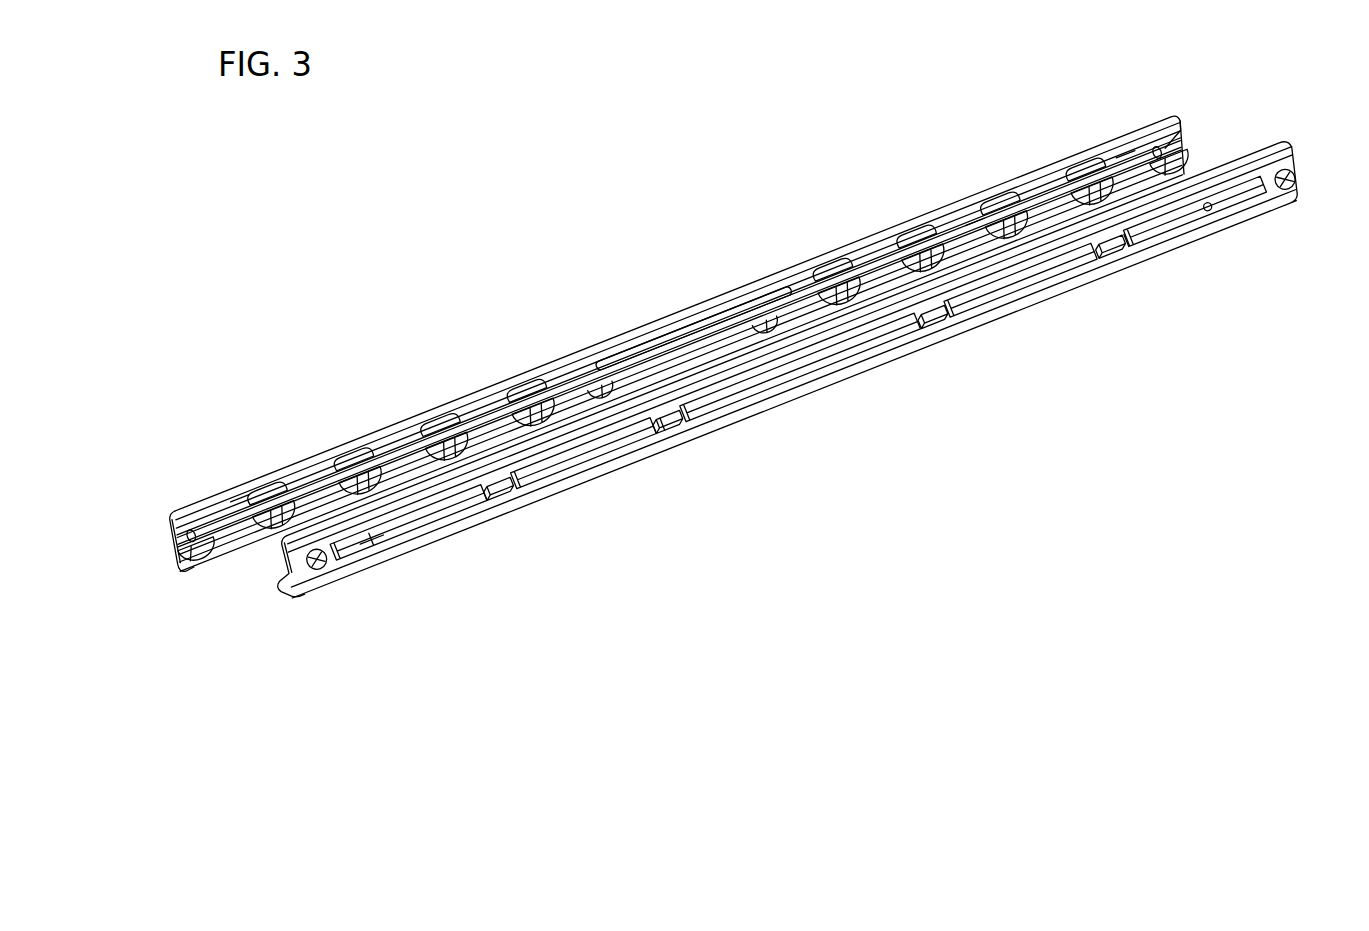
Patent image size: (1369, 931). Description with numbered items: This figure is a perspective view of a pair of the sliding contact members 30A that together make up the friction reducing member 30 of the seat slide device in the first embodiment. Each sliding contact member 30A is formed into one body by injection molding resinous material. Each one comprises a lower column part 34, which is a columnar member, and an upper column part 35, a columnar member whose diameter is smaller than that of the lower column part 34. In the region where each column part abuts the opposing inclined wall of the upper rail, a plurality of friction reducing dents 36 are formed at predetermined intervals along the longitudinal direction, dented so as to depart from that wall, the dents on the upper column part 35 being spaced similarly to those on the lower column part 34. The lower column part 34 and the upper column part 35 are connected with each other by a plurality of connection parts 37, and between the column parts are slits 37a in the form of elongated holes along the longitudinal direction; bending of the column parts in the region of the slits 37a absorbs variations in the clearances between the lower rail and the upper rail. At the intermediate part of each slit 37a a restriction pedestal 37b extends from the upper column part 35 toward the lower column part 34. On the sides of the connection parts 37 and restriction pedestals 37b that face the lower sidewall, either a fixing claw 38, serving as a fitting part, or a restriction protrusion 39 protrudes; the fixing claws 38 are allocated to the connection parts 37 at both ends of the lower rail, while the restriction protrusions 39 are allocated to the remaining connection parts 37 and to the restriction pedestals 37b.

The sliding contact member 30A is at (730, 364).
The friction reducing member 30 is at (626, 186).
The lower column part 34 is at (242, 560).
The upper column part 35 is at (220, 490).
The friction reducing dent 36 is at (1100, 165).
The connection part 37 is at (1175, 146).
The slit 37a is at (1125, 152).
The restriction pedestal 37b is at (975, 220).
The fixing claw 38 is at (1300, 182).
The restriction protrusion 39 is at (1108, 250).